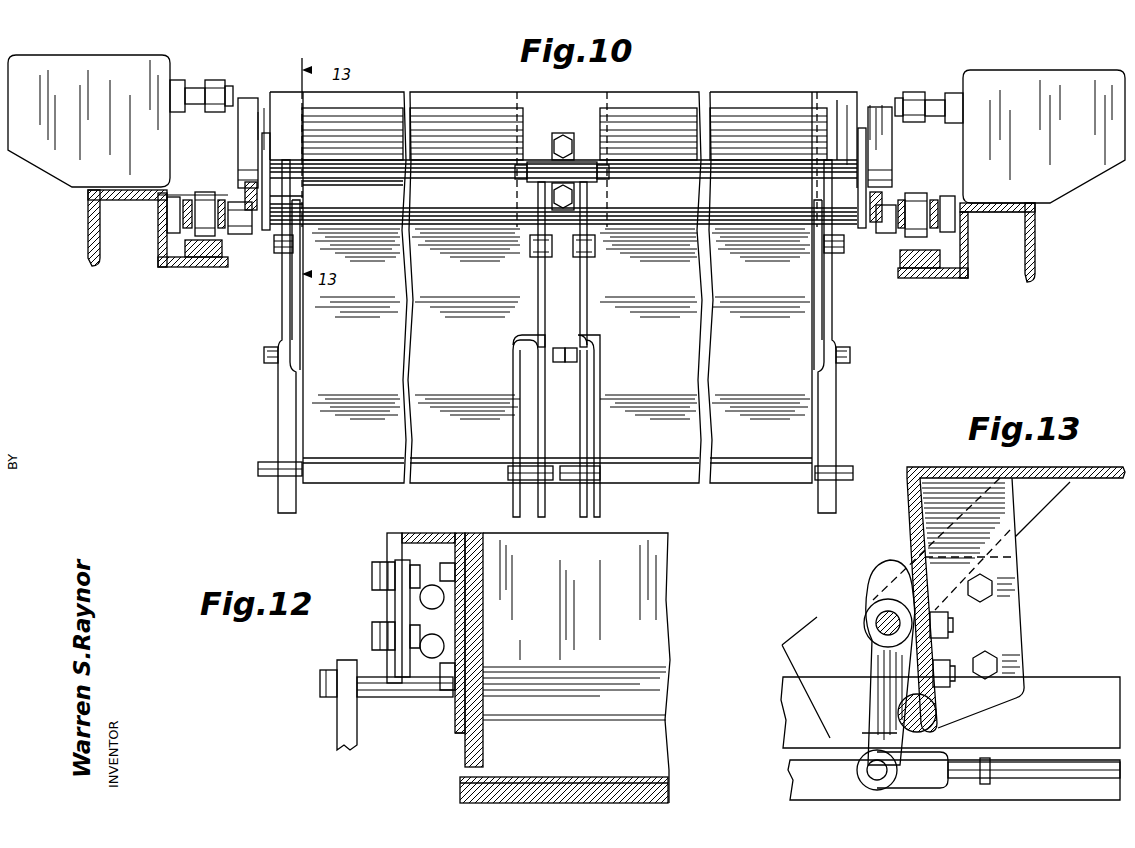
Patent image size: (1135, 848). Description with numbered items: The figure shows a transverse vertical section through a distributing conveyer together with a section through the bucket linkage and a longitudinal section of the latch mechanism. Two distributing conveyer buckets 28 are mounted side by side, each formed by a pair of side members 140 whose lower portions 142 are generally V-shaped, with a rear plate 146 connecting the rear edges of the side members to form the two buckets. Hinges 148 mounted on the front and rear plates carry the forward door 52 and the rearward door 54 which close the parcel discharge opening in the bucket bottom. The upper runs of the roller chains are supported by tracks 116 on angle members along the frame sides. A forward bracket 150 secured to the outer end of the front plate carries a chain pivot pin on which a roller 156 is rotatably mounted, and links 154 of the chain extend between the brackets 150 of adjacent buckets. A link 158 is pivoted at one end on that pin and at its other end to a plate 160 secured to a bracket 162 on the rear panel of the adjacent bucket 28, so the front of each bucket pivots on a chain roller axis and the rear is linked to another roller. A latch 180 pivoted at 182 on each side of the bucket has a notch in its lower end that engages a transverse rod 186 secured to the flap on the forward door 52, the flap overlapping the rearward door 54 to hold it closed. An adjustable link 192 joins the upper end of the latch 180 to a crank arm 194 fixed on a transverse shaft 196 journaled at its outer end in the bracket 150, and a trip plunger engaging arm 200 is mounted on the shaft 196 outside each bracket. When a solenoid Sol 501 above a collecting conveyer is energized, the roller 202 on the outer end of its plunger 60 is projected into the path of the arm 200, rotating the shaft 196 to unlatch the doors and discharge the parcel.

In FIG. 10, the distributing conveyer bucket 28 is at (686, 100).
In FIG. 12, the distributing conveyer bucket 28 is at (646, 545).
In FIG. 10, the forward door 52 is at (322, 386).
In FIG. 12, the rearward door 54 is at (465, 783).
In FIG. 10, the plunger 60 is at (192, 80).
In FIG. 10, the track 116 is at (185, 250).
In FIG. 13, the track 116 is at (792, 772).
In FIG. 10, the side member 140 is at (300, 308).
In FIG. 12, the side member 140 is at (462, 606).
In FIG. 12, the V-shaped lower portion 142 is at (480, 636).
In FIG. 13, the rear plate 146 is at (908, 536).
In FIG. 10, the hinge 148 is at (462, 213).
In FIG. 13, the hinge 148 is at (945, 718).
In FIG. 10, the forward bracket 150 is at (262, 150).
In FIG. 13, the forward bracket 150 is at (850, 663).
In FIG. 10, the link 154 is at (190, 222).
In FIG. 13, the link 154 is at (785, 662).
In FIG. 10, the roller 156 is at (210, 184).
In FIG. 13, the roller 156 is at (852, 755).
In FIG. 10, the link 158 is at (246, 190).
In FIG. 12, the link 158 is at (340, 737).
In FIG. 13, the link 158 is at (782, 645).
In FIG. 12, the plate 160 is at (400, 608).
In FIG. 12, the bracket 162 is at (387, 544).
In FIG. 10, the latch 180 is at (578, 306).
In FIG. 10, the latch pivot 182 is at (263, 354).
In FIG. 10, the transverse rod 186 is at (265, 462).
In FIG. 10, the adjustable link 192 is at (274, 247).
In FIG. 13, the adjustable link 192 is at (1072, 750).
In FIG. 10, the crank arm 194 is at (285, 202).
In FIG. 13, the crank arm 194 is at (862, 732).
In FIG. 10, the transverse shaft 196 is at (368, 172).
In FIG. 10, the trip plunger engaging arm 200 is at (238, 130).
In FIG. 10, the roller 202 is at (218, 80).
In FIG. 10, the motor 501 is at (92, 38).